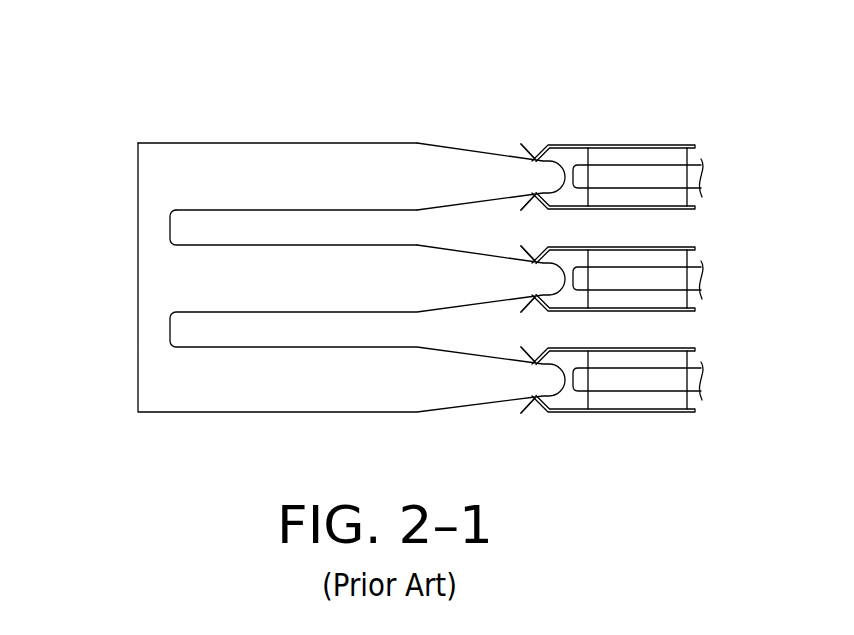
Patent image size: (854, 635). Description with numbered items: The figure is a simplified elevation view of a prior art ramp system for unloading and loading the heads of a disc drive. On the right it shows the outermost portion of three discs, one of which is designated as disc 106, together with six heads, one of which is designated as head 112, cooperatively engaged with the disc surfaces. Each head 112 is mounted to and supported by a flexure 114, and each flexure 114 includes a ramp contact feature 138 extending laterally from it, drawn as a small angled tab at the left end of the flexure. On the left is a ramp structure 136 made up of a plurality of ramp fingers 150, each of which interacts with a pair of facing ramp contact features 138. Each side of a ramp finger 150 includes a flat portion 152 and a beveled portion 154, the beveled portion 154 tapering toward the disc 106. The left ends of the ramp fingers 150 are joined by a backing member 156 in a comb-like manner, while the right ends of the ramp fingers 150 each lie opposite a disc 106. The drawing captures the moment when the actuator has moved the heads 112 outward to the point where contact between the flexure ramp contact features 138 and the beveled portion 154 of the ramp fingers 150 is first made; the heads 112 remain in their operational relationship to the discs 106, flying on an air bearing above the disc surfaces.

The ramp structure 136 is at (140, 110).
The ramp finger 150 is at (237, 152).
The flat portion 152 is at (325, 143).
The beveled portion 154 is at (445, 143).
The backing member 156 is at (173, 272).
The ramp contact feature 138 is at (533, 150).
The flexure 114 is at (637, 145).
The head 112 is at (677, 155).
The disc 106 is at (677, 278).